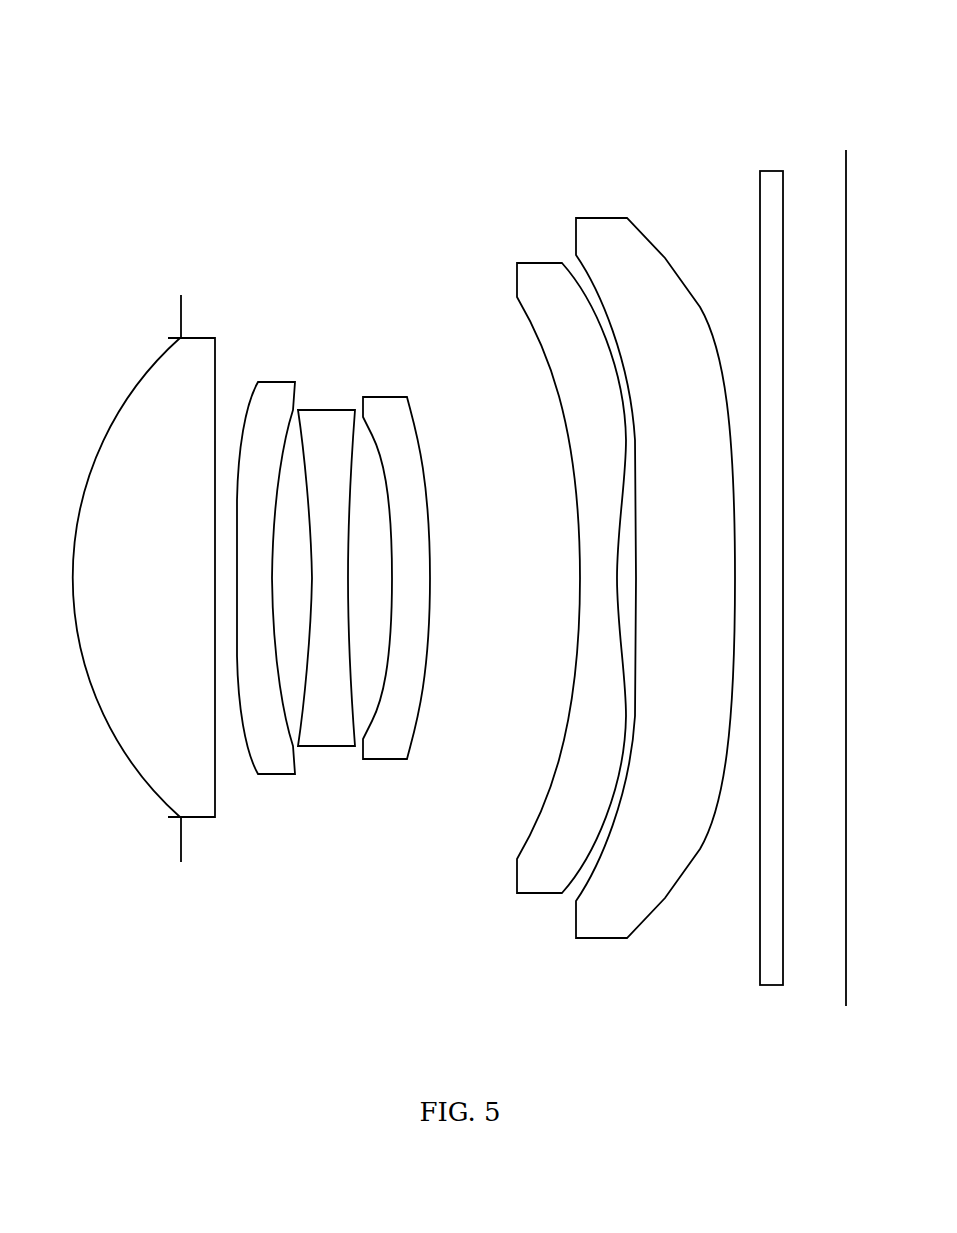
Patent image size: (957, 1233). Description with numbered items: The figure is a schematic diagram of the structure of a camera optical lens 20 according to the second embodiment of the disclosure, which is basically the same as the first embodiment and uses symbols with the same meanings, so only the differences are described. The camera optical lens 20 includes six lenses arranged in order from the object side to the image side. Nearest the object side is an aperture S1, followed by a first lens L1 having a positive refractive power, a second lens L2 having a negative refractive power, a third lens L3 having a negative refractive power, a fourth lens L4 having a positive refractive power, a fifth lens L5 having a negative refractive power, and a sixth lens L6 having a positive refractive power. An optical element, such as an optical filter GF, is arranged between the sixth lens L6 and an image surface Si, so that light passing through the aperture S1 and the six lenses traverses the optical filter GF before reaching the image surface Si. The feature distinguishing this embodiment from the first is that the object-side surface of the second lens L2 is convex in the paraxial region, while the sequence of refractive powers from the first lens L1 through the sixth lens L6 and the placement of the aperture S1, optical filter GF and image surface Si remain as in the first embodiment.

The camera optical lens 20 is at (448, 37).
The aperture S1 is at (181, 566).
The first lens L1 is at (144, 562).
The second lens L2 is at (266, 562).
The third lens L3 is at (326, 561).
The fourth lens L4 is at (396, 563).
The fifth lens L5 is at (571, 563).
The sixth lens L6 is at (655, 562).
The optical filter GF is at (772, 563).
The image surface Si is at (846, 562).